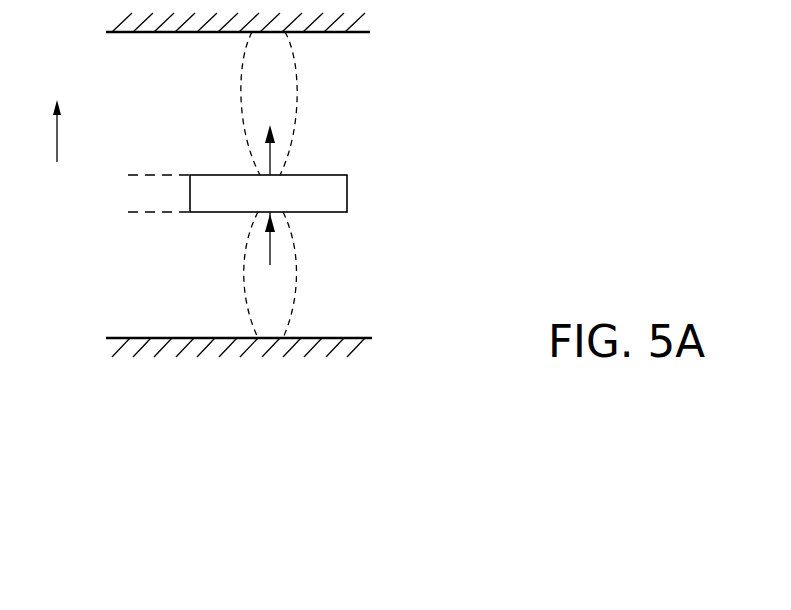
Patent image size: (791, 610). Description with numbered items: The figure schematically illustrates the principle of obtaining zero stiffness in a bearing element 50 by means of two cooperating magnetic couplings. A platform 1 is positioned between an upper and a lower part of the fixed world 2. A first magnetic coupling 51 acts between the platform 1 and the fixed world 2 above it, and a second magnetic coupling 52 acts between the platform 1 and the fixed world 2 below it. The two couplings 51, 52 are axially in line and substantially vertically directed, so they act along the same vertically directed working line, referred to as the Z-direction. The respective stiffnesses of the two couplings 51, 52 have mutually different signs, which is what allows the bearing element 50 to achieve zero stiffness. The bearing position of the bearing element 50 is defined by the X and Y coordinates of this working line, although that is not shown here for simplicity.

The platform 1 is at (347, 193).
The fixed world 2 is at (340, 32).
The bearing element 50 is at (481, 122).
The first magnetic coupling 51 is at (298, 107).
The second magnetic coupling 52 is at (283, 227).